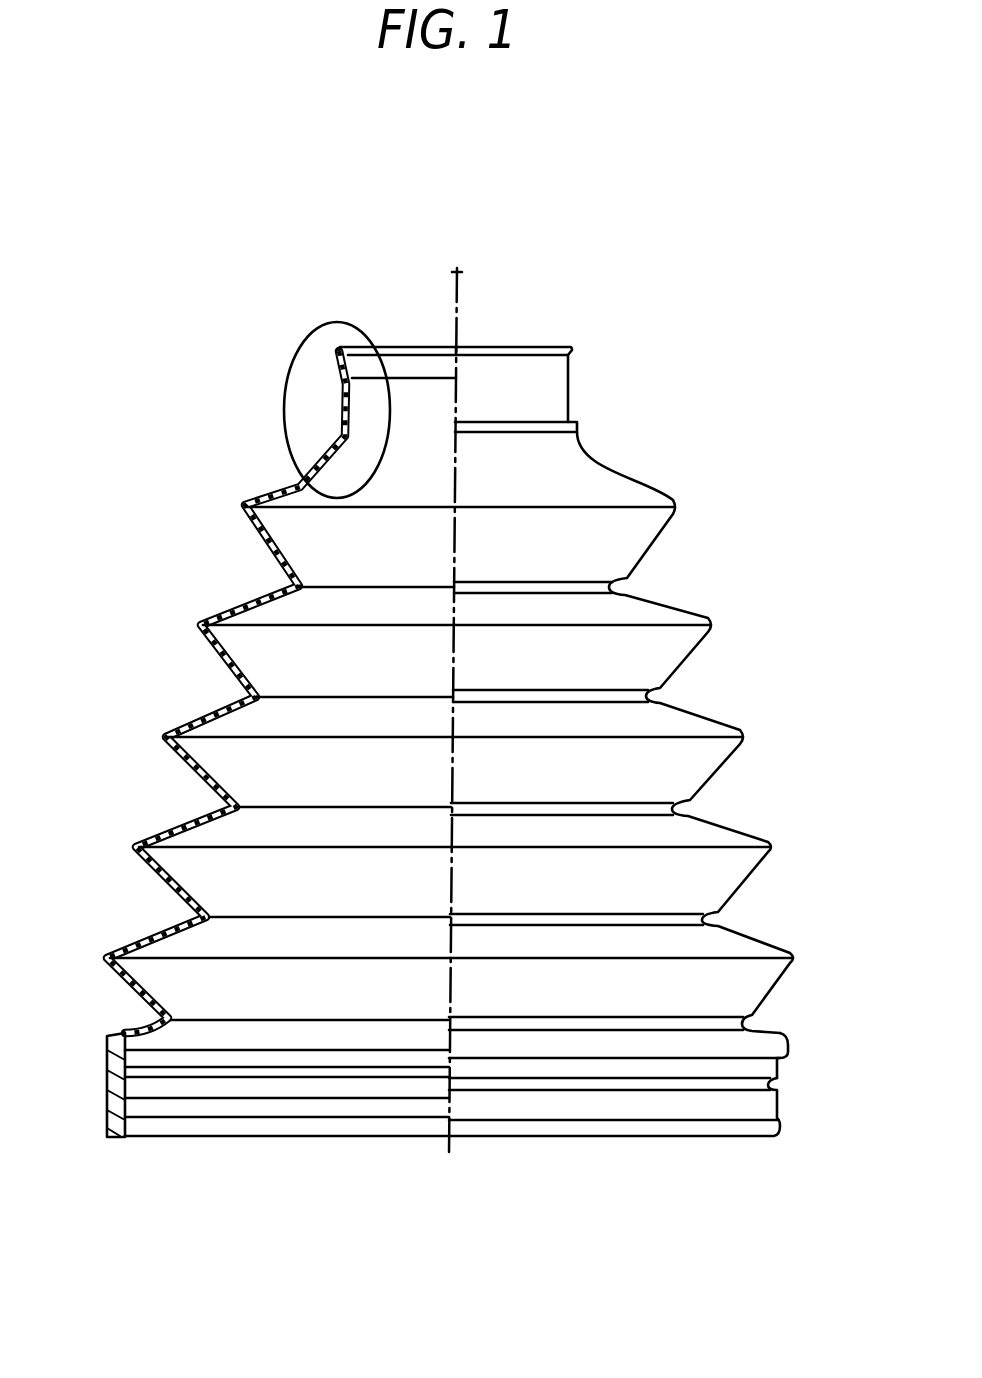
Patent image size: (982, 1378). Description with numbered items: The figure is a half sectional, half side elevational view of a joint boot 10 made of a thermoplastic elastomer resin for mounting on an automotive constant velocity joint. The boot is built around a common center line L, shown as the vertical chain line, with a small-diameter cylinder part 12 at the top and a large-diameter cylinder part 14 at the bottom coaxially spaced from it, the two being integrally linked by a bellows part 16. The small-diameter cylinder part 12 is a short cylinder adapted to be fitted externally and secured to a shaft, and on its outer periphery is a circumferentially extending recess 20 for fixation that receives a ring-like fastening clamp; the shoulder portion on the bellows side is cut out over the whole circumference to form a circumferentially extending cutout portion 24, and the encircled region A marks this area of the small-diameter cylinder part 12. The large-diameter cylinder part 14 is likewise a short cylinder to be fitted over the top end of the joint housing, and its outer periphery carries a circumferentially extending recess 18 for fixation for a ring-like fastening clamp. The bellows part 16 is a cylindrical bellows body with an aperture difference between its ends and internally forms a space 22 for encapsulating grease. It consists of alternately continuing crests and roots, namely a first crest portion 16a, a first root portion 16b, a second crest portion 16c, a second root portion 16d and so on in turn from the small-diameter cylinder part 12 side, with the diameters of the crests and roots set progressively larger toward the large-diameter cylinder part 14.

The joint boot 10 is at (475, 225).
The small-diameter cylinder part 12 is at (419, 362).
The large-diameter cylinder part 14 is at (365, 1127).
The bellows part 16 is at (187, 767).
The first crest portion 16a is at (239, 503).
The first root portion 16b is at (287, 587).
The second crest portion 16c is at (197, 624).
The second root portion 16d is at (250, 697).
The recess for fixation 18 is at (778, 1098).
The recess for fixation 20 is at (569, 380).
The space 22 is at (302, 978).
The cutout portion 24 is at (578, 428).
The detail region A is at (286, 393).
The center line L is at (461, 278).